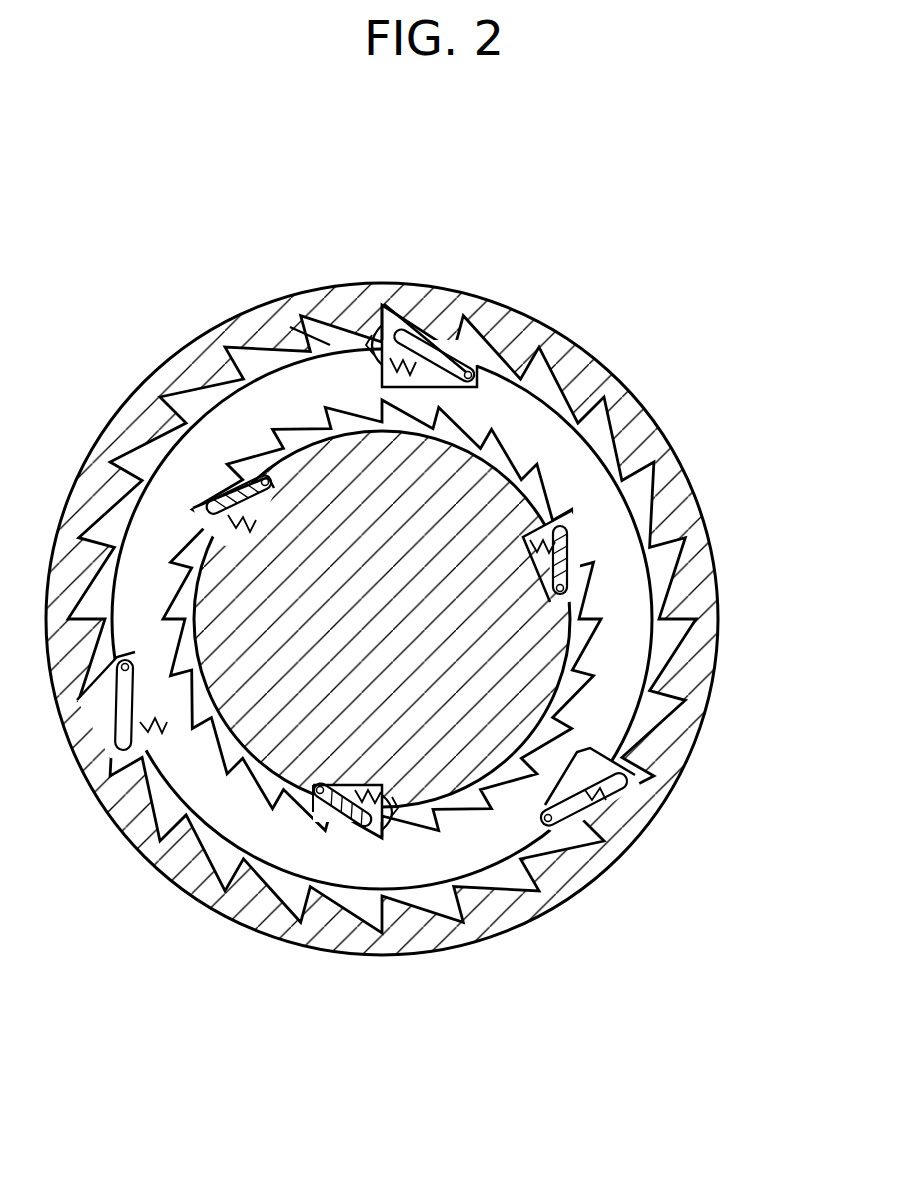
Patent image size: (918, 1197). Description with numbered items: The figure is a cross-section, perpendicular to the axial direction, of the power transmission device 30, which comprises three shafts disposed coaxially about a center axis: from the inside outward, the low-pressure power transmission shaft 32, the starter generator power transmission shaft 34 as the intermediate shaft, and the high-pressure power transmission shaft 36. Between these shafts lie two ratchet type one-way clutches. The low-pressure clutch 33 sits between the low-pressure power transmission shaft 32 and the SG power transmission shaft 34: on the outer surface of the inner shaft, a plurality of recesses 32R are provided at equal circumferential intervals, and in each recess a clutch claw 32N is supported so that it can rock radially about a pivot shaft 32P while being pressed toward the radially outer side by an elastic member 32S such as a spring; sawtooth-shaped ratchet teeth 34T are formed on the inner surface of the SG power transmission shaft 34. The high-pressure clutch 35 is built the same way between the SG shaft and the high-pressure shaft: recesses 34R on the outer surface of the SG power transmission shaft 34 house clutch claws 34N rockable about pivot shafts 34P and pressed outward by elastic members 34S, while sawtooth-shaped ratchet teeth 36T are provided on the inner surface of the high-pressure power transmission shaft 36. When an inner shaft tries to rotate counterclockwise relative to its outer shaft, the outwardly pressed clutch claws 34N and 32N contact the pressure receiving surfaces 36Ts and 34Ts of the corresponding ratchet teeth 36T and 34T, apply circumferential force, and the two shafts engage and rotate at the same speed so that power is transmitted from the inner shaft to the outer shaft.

The power transmission device 30 is at (688, 272).
The low-pressure power transmission shaft 32 is at (497, 672).
The pivot shaft 32P is at (325, 822).
The elastic member 32S is at (368, 830).
The clutch claw 32N is at (322, 845).
The recess 32R is at (412, 825).
The low-pressure clutch 33 is at (205, 1036).
The starter generator power transmission shaft 34 is at (627, 640).
The ratchet tooth 34T is at (392, 835).
The pressure receiving surface 34Ts is at (363, 830).
The recess 34R is at (290, 325).
The clutch claw 34N is at (406, 332).
The elastic member 34S is at (442, 350).
The pivot shaft 34P is at (470, 372).
The high-pressure clutch 35 is at (565, 214).
The high-pressure power transmission shaft 36 is at (697, 575).
The ratchet tooth 36T is at (365, 345).
The pressure receiving surface 36Ts is at (405, 355).